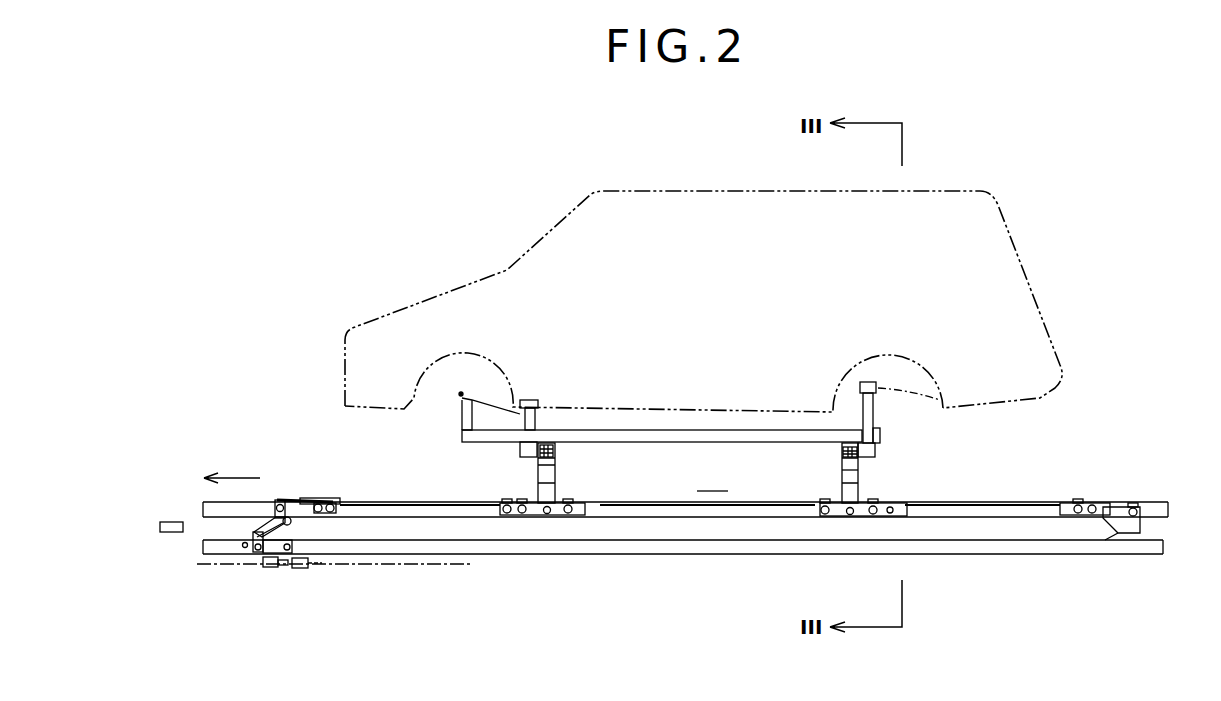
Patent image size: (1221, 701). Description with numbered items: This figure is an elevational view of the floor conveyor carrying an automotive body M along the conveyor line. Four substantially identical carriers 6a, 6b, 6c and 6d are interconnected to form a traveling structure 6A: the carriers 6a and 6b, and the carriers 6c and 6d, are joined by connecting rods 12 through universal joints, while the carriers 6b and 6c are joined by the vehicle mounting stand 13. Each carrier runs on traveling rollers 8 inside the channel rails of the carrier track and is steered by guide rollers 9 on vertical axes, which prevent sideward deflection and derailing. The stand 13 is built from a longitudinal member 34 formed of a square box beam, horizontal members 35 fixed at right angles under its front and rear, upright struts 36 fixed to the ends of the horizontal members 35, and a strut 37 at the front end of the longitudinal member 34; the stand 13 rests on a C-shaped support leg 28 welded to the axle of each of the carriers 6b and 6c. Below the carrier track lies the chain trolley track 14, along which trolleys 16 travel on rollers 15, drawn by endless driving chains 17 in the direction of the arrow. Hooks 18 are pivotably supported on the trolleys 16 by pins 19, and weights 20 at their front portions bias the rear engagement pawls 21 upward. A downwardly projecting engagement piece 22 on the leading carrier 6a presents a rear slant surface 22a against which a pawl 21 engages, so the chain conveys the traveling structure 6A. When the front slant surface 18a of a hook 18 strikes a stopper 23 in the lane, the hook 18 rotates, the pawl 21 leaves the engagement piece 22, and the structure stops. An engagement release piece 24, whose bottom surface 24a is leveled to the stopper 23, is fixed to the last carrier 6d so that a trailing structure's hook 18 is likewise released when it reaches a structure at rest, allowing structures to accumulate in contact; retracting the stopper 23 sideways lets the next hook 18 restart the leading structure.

The automotive body M is at (830, 195).
The traveling structure 6A is at (685, 493).
The leading carrier 6a is at (312, 498).
The carrier 6b is at (532, 500).
The carrier 6c is at (863, 517).
The last carrier 6d is at (1113, 508).
The traveling rollers 8 is at (525, 513).
The guide rollers 9 is at (335, 494).
The connecting rods 12 is at (430, 505).
The vehicle mounting stand 13 is at (897, 428).
The chain trolley track 14 is at (388, 556).
The rollers 15 is at (264, 560).
The trolleys 16 is at (279, 566).
The endless driving chains 17 is at (302, 569).
The hooks 18 is at (255, 531).
The front slant surface 18a is at (247, 538).
The pins 19 is at (252, 530).
The weights 20 is at (247, 547).
The engagement pawl 21 is at (292, 521).
The engagement piece 22 is at (272, 512).
The rear slant surface 22a is at (288, 498).
The stopper 23 is at (173, 522).
The engagement release piece 24 is at (1147, 527).
The bottom surface 24a is at (1130, 535).
The C-shaped support leg 28 is at (860, 477).
The longitudinal member 34 is at (703, 428).
The horizontal members 35 is at (517, 448).
The upright struts 36 is at (537, 413).
The strut 37 is at (460, 413).